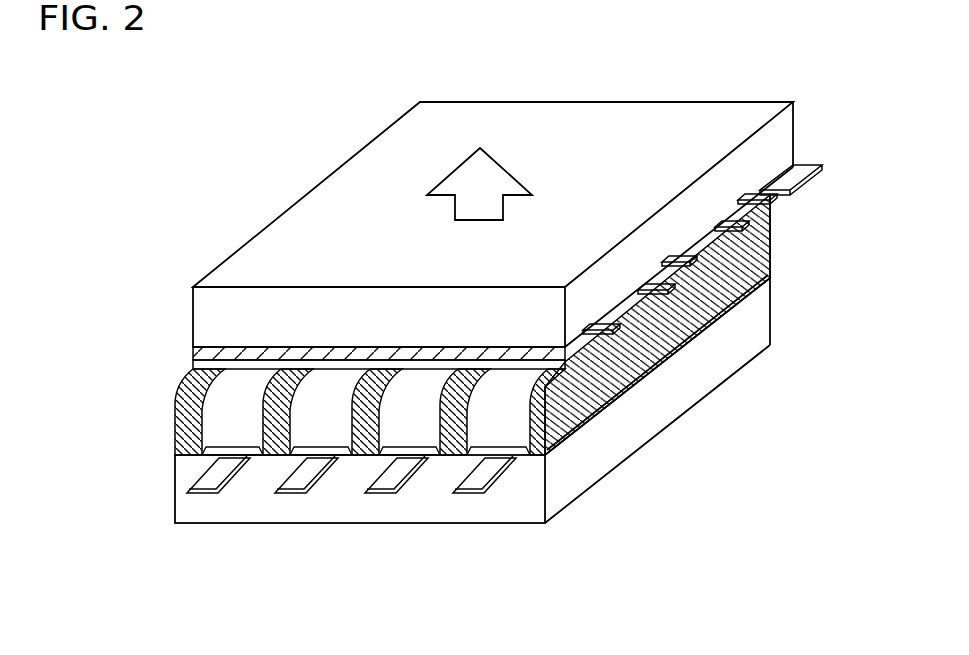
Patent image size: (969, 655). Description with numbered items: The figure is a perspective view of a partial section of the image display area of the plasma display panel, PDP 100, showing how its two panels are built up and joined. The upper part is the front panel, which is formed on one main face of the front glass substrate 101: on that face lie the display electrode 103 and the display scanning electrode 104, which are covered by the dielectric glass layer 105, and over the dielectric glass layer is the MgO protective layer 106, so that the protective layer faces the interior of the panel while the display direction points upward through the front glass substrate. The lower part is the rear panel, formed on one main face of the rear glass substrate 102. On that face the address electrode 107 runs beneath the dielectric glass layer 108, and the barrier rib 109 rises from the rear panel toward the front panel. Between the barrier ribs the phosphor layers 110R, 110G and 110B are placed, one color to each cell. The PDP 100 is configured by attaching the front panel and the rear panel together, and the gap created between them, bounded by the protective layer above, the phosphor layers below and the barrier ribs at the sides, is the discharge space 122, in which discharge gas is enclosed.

The PDP 100 is at (775, 300).
The front glass substrate 101 is at (200, 303).
The rear glass substrate 102 is at (433, 513).
The display electrode 103 is at (738, 227).
The display scanning electrode 104 is at (768, 233).
The dielectric glass layer 105 is at (193, 353).
The MgO protective layer 106 is at (193, 367).
The address electrode 107 is at (213, 480).
The dielectric glass layer 108 is at (175, 458).
The barrier rib 109 is at (557, 372).
The phosphor layer 110R is at (178, 470).
The phosphor layer 110G is at (300, 468).
The phosphor layer 110B is at (392, 482).
The discharge space 122 is at (513, 392).